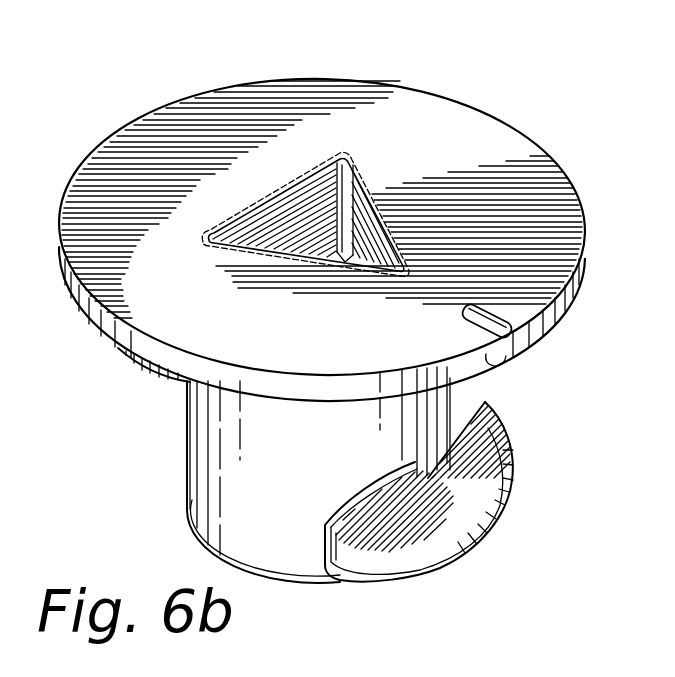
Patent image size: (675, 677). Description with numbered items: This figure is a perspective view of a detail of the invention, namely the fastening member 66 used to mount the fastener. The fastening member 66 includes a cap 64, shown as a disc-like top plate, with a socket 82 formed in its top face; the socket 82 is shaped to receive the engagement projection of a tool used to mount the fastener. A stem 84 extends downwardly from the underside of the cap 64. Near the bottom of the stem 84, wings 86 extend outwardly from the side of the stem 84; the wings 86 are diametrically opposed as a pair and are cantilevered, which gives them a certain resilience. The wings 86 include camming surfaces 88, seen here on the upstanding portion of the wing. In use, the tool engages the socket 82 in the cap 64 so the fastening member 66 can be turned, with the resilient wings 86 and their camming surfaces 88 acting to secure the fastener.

The fastening member 66 is at (61, 137).
The cap 64 is at (243, 107).
The socket 82 is at (307, 207).
The stem 84 is at (230, 488).
The wings 86 is at (453, 543).
The camming surfaces 88 is at (473, 477).